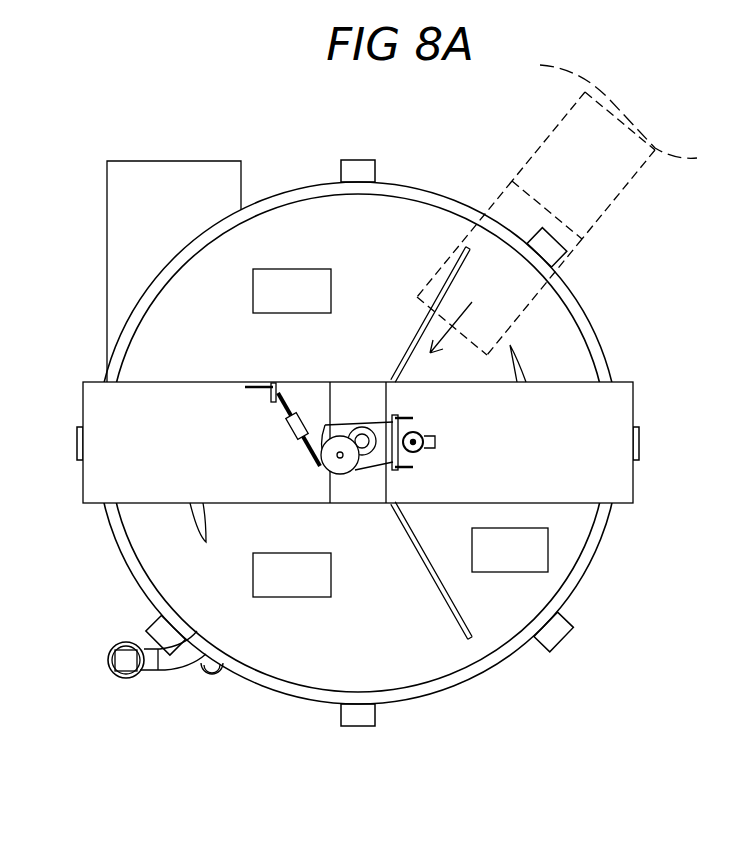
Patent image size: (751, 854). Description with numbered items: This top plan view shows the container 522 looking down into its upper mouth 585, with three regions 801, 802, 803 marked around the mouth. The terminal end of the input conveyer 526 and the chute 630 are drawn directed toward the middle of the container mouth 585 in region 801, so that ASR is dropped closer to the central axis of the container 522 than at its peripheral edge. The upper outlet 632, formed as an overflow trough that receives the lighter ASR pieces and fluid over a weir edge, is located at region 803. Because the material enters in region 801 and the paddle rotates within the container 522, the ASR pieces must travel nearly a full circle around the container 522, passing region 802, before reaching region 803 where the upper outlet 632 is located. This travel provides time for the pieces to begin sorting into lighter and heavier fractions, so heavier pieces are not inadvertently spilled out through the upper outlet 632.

The container 522 is at (280, 697).
The input conveyer 526 is at (612, 211).
The upper mouth 585 is at (432, 190).
The chute 630 is at (527, 312).
The upper outlet 632 is at (160, 161).
The region 801 is at (469, 443).
The region 802 is at (292, 575).
The region 803 is at (292, 291).